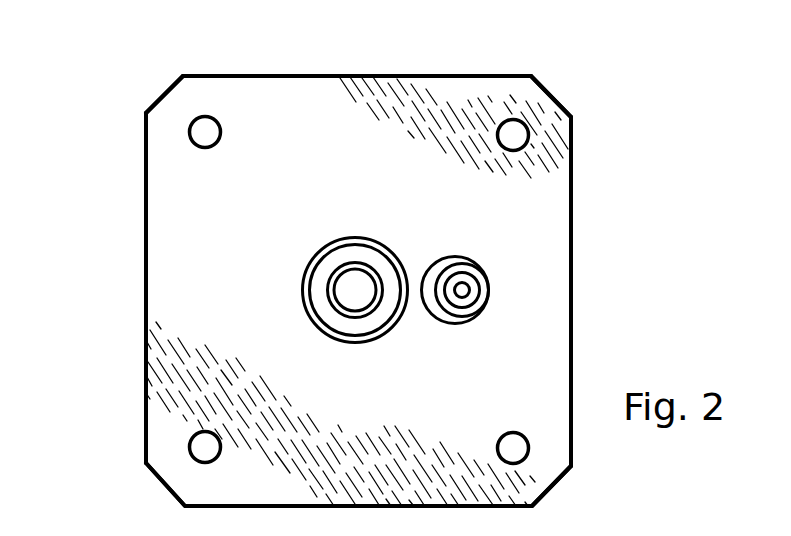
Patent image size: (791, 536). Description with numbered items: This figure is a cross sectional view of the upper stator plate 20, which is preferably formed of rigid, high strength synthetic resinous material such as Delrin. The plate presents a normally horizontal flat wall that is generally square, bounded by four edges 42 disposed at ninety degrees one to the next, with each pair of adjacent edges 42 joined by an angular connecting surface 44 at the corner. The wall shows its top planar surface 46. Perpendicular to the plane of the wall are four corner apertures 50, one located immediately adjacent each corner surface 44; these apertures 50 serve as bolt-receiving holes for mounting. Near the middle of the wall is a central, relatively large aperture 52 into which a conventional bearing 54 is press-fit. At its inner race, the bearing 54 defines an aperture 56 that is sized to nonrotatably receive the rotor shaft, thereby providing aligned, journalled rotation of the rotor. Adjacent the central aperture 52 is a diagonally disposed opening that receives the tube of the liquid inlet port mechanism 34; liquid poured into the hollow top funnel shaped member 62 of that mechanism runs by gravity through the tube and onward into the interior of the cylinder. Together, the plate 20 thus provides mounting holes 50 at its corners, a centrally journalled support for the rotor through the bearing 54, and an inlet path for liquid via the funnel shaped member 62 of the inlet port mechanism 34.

The upper stator plate 20 is at (146, 275).
The edges 42 is at (400, 77).
The angular connecting surface 44 is at (163, 96).
The corner apertures 50 is at (192, 135).
The top planar surface 46 is at (404, 159).
The bearing 54 is at (365, 253).
The central aperture 52 is at (367, 333).
The aperture 56 is at (352, 305).
The liquid inlet port mechanism 34 is at (455, 256).
The funnel shaped member 62 is at (457, 315).